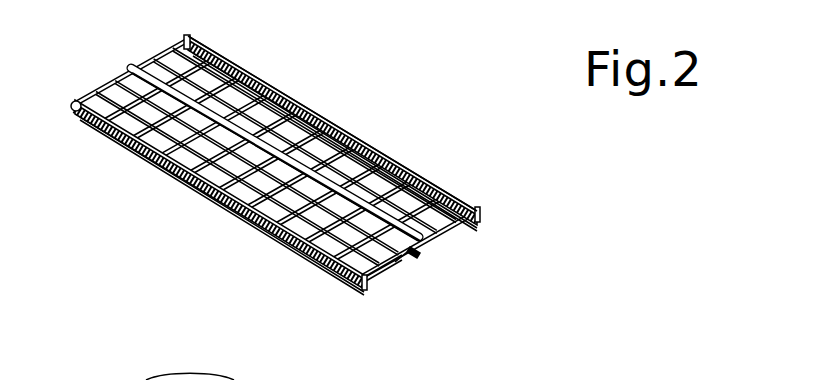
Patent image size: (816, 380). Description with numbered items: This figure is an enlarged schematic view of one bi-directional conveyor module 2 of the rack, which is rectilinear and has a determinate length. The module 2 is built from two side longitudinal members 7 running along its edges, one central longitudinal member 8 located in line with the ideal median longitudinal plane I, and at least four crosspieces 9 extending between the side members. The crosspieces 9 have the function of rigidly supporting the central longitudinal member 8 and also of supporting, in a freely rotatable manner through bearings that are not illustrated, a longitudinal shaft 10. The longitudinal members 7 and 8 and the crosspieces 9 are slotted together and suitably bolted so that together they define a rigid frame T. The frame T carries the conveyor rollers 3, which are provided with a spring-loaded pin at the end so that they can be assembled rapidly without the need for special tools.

The bi-directional conveyor module 2 is at (330, 97).
The conveyor roller 3 is at (210, 53).
The side longitudinal member 7 is at (440, 177).
The central longitudinal member 8 is at (122, 66).
The crosspiece 9 is at (185, 60).
The longitudinal shaft 10 is at (420, 252).
The frame T is at (340, 120).
The median longitudinal plane I is at (132, 66).